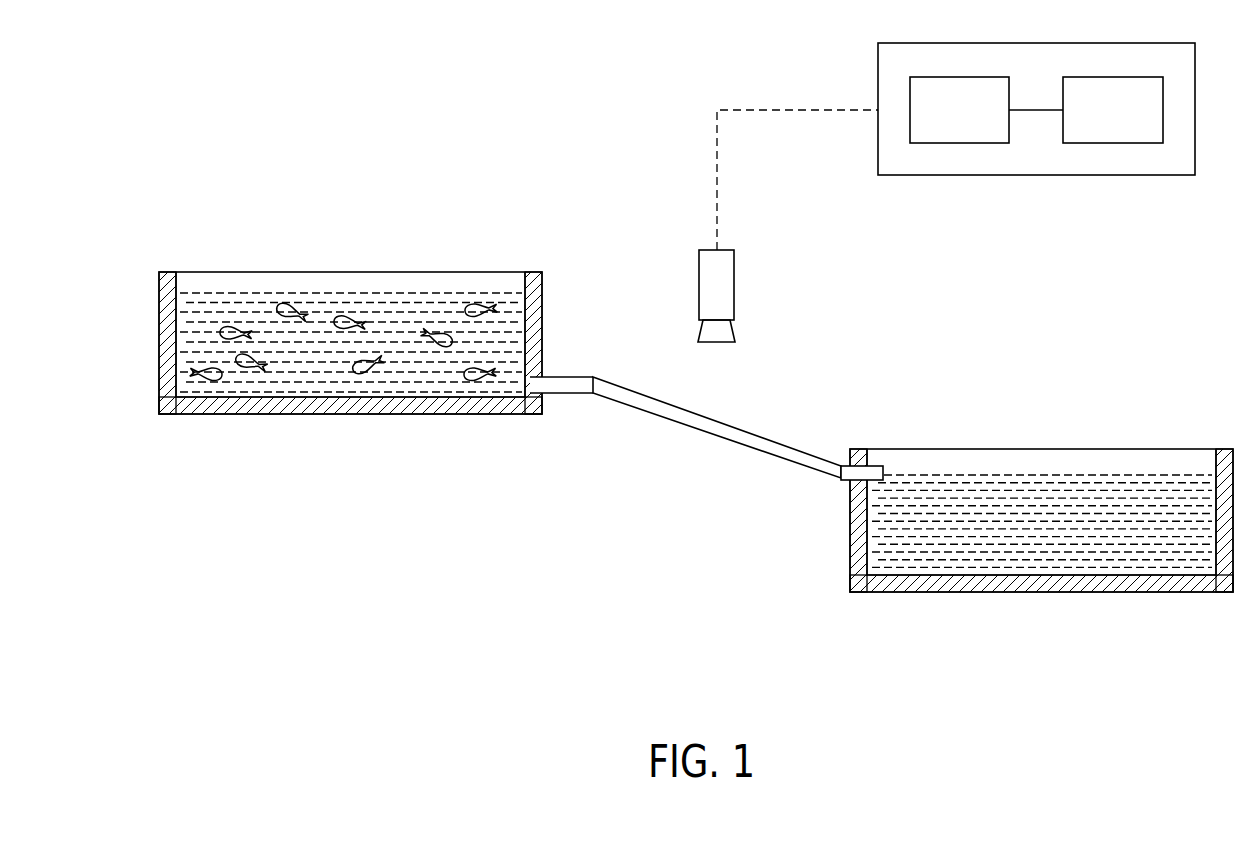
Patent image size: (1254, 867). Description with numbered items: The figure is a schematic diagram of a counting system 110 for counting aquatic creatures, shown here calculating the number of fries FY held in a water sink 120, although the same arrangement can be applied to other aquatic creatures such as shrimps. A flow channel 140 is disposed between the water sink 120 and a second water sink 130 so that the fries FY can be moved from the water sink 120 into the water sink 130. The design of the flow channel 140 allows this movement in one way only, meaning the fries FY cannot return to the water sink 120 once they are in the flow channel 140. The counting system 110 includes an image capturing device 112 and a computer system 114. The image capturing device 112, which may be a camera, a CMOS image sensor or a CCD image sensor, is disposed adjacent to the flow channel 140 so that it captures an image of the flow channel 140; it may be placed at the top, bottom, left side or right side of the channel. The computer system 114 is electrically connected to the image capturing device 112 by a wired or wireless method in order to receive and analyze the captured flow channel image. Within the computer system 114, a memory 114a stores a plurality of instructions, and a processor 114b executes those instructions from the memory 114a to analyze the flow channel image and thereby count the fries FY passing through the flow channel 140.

The counting system 110 is at (946, 192).
The image capturing device 112 is at (734, 283).
The computer system 114 is at (1036, 153).
The memory 114a is at (988, 125).
The processor 114b is at (1143, 125).
The water sink 120 is at (160, 307).
The water sink 130 is at (878, 592).
The flow channel 140 is at (660, 417).
The fries FY is at (291, 305).